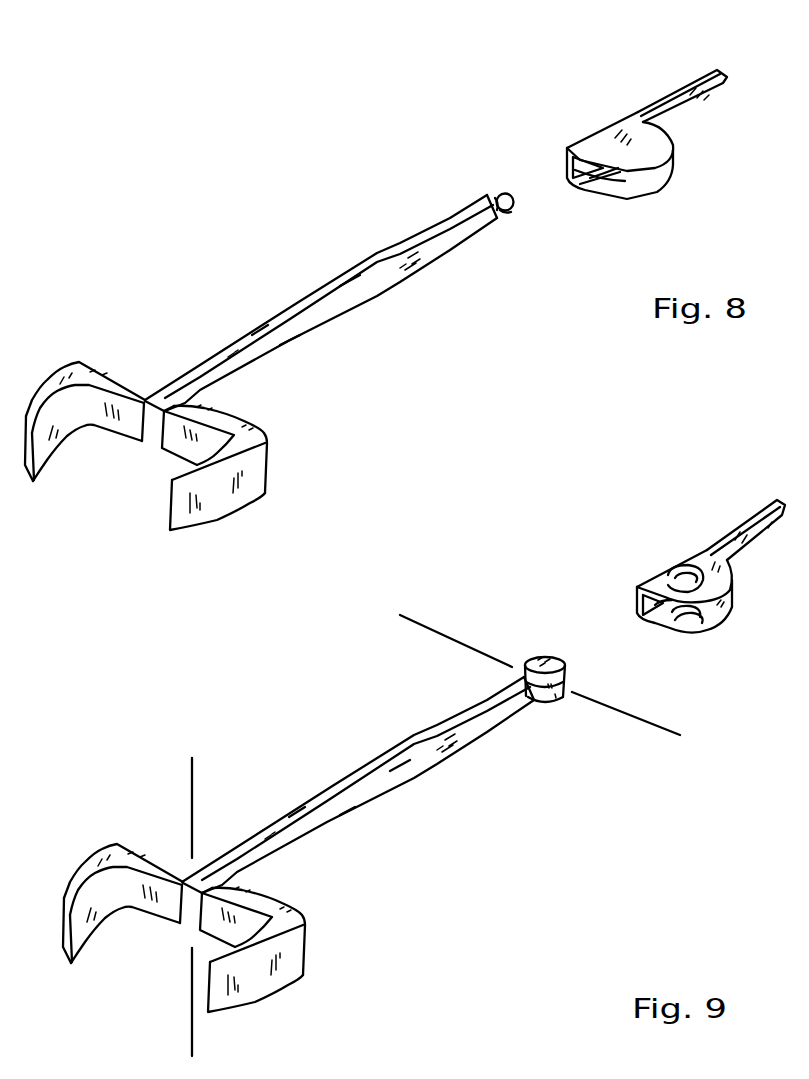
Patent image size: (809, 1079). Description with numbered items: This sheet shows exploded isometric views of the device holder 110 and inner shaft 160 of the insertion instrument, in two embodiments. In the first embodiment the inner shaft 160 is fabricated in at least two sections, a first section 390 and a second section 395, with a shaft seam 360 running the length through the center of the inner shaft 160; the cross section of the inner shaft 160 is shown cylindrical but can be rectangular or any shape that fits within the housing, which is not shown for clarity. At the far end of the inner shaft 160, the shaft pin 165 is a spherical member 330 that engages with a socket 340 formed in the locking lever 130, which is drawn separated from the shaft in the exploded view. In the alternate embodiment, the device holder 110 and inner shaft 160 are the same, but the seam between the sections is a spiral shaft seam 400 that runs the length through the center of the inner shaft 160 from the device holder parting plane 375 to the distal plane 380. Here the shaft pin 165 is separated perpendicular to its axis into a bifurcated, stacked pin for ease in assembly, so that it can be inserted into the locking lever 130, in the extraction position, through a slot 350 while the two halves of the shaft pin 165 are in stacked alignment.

In FIG. 8, the device holder 110 is at (68, 550).
In FIG. 9, the device holder 110 is at (118, 1008).
In FIG. 8, the inner shaft 160 is at (376, 254).
In FIG. 9, the inner shaft 160 is at (433, 727).
In FIG. 8, the second section 395 is at (260, 330).
In FIG. 9, the second section 395 is at (312, 797).
In FIG. 8, the first section 390 is at (288, 345).
In FIG. 9, the first section 390 is at (347, 824).
In FIG. 8, the shaft seam 360 is at (348, 280).
In FIG. 8, the shaft pin 165 is at (495, 168).
In FIG. 8, the spherical member 330 is at (516, 212).
In FIG. 8, the locking lever 130 is at (650, 102).
In FIG. 9, the locking lever 130 is at (712, 537).
In FIG. 8, the socket 340 is at (683, 157).
In FIG. 9, the device holder parting plane 375 is at (188, 793).
In FIG. 9, the distal plane 380 is at (450, 634).
In FIG. 9, the spiral shaft seam 400 is at (397, 765).
In FIG. 9, the slot 350 is at (666, 631).